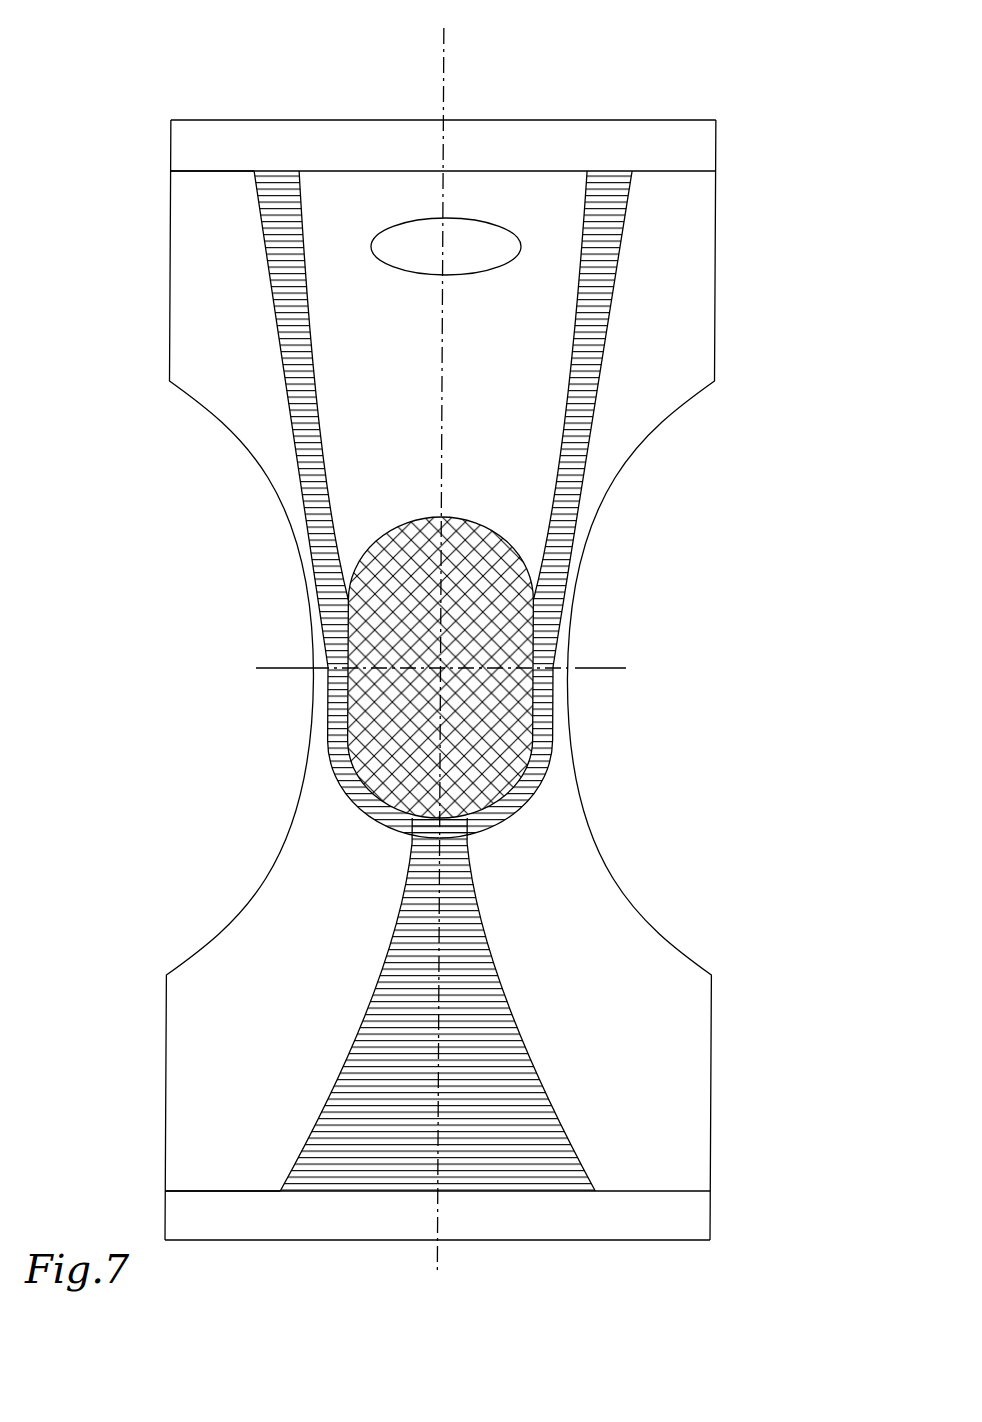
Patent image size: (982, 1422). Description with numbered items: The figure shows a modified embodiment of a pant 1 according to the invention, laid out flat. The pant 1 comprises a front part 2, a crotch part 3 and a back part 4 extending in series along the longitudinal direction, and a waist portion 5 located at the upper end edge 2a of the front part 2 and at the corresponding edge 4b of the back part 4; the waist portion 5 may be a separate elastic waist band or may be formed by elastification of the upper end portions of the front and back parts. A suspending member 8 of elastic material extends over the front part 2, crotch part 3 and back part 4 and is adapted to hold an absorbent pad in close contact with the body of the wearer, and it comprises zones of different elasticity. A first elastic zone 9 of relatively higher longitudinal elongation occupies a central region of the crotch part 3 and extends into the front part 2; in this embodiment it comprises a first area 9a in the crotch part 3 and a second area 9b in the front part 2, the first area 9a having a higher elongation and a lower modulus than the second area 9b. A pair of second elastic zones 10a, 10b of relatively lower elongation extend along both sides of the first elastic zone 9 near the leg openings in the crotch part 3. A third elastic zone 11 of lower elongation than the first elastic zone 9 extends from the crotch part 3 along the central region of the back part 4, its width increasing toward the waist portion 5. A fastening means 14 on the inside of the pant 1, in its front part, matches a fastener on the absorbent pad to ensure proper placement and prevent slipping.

The pant 1 is at (772, 107).
The front part 2 is at (220, 327).
The upper end edge 2a is at (219, 171).
The crotch part 3 is at (315, 711).
The back part 4 is at (226, 1044).
The lower end face 4b is at (216, 1191).
The waist portion 5 is at (464, 143).
The suspending member 8 is at (342, 215).
The first elastic zone 9 is at (428, 446).
The first area 9a is at (525, 640).
The second area 9b is at (538, 195).
The second elastic zone 10a is at (284, 290).
The second elastic zone 10b is at (585, 322).
The third elastic zone 11 is at (426, 975).
The fastening means 14 is at (459, 259).